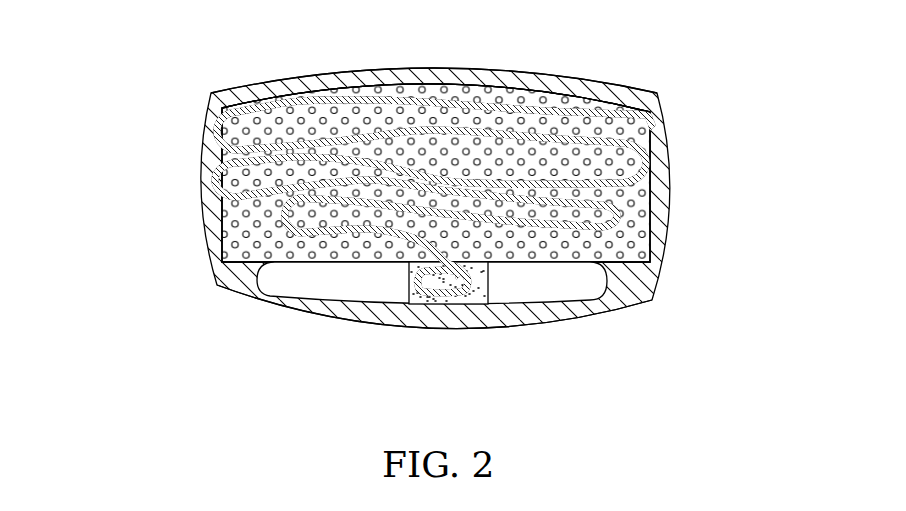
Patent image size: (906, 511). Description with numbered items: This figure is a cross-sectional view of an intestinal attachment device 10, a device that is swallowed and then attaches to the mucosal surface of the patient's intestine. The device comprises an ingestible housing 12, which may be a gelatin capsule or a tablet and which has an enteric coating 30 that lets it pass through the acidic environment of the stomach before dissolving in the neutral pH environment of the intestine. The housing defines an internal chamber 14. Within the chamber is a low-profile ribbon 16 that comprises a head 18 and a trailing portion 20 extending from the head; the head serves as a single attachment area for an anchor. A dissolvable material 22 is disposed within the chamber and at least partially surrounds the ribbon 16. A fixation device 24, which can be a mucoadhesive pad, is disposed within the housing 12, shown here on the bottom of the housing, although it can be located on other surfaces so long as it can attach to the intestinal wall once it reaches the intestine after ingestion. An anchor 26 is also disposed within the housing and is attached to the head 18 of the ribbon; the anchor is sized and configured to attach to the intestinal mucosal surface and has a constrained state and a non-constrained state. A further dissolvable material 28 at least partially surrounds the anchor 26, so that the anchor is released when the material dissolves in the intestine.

The intestinal attachment device 10 is at (410, 196).
The ingestible housing 12 is at (560, 77).
The internal chamber 14 is at (654, 127).
The low-profile ribbon 16 is at (437, 94).
The head 18 is at (405, 277).
The trailing portion 20 is at (620, 215).
The dissolvable material 22 is at (237, 227).
The fixation device 24 is at (617, 307).
The anchor 26 is at (470, 292).
The dissolvable material 28 is at (416, 292).
The enteric coating 30 is at (370, 82).